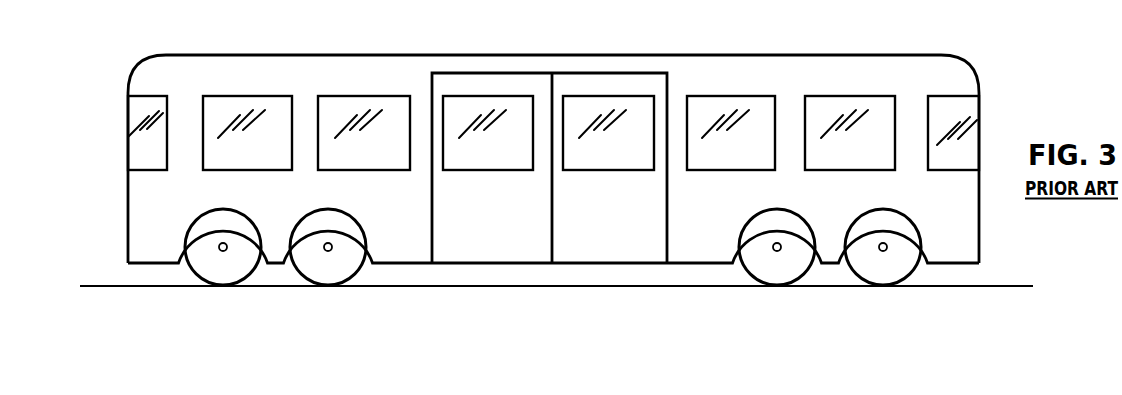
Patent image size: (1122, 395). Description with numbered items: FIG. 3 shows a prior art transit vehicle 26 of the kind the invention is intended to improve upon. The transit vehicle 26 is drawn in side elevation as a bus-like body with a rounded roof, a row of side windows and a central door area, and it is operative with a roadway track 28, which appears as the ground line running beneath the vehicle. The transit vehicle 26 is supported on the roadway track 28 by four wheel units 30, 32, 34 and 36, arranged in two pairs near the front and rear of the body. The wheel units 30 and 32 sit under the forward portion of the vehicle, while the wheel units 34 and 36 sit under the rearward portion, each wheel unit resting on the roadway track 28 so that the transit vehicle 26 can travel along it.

The transit vehicle 26 is at (128, 86).
The roadway track 28 is at (104, 284).
The wheel unit 30 is at (228, 277).
The wheel unit 32 is at (330, 277).
The wheel unit 34 is at (778, 278).
The wheel unit 36 is at (890, 278).